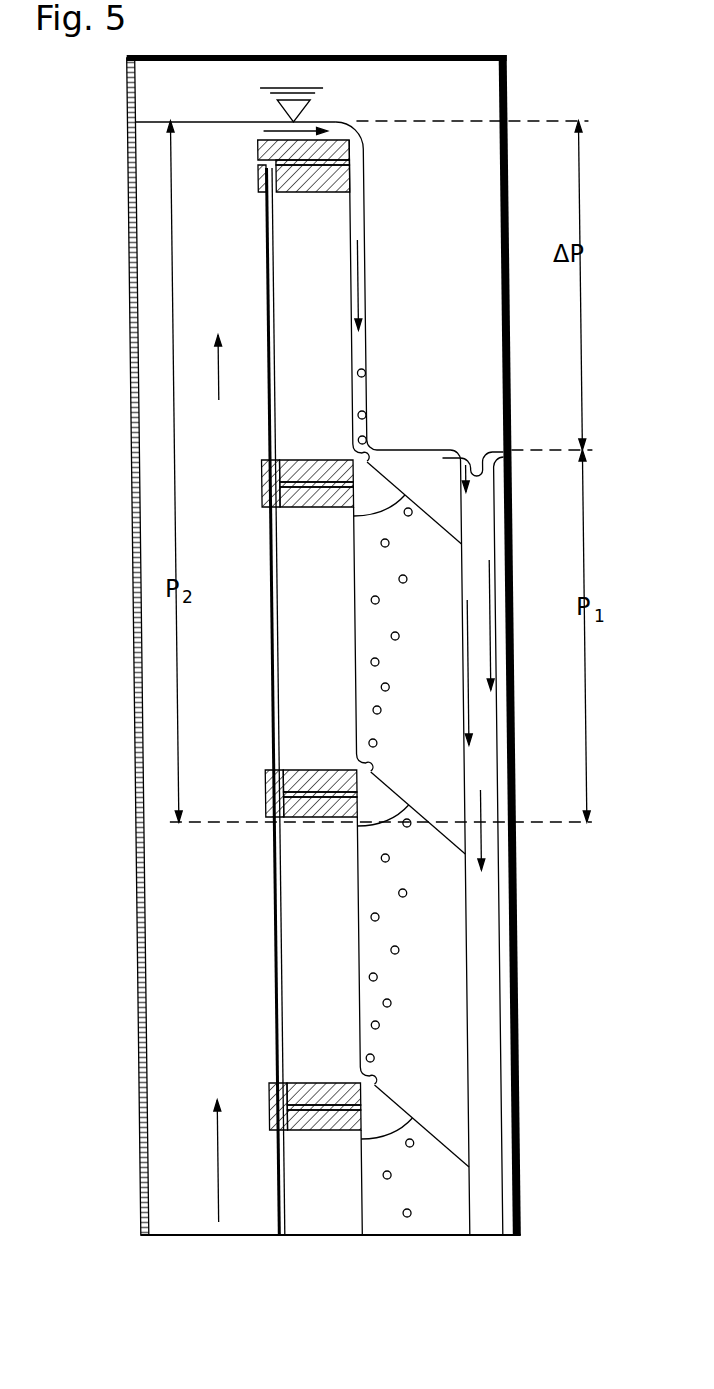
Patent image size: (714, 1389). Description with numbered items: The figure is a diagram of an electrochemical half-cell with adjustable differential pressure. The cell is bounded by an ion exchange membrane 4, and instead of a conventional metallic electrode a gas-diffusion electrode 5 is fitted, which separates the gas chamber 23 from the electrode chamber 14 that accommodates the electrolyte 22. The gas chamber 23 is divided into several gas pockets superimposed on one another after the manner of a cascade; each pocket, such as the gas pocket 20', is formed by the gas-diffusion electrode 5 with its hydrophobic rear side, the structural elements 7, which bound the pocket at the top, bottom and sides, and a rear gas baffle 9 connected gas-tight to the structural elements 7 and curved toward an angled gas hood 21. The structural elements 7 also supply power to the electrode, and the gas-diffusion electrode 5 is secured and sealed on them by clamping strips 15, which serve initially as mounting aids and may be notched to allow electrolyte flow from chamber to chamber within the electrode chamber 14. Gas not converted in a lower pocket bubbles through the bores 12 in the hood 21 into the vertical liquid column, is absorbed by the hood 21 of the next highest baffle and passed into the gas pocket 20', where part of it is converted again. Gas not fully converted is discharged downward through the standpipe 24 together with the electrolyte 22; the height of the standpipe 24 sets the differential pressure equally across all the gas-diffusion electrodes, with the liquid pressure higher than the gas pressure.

The ion exchange membrane 4 is at (170, 1022).
The gas-diffusion electrode 5 is at (277, 935).
The structural elements 7 is at (322, 812).
The gas baffle 9 is at (352, 612).
The bores 12 is at (380, 780).
The electrode chamber 14 is at (162, 692).
The clamping strips 15 is at (267, 797).
The gas pocket 20' is at (407, 862).
The gas hood 21 is at (447, 838).
The electrolyte 22 is at (430, 962).
The gas chamber 23 is at (323, 1236).
The standpipe 24 is at (478, 546).